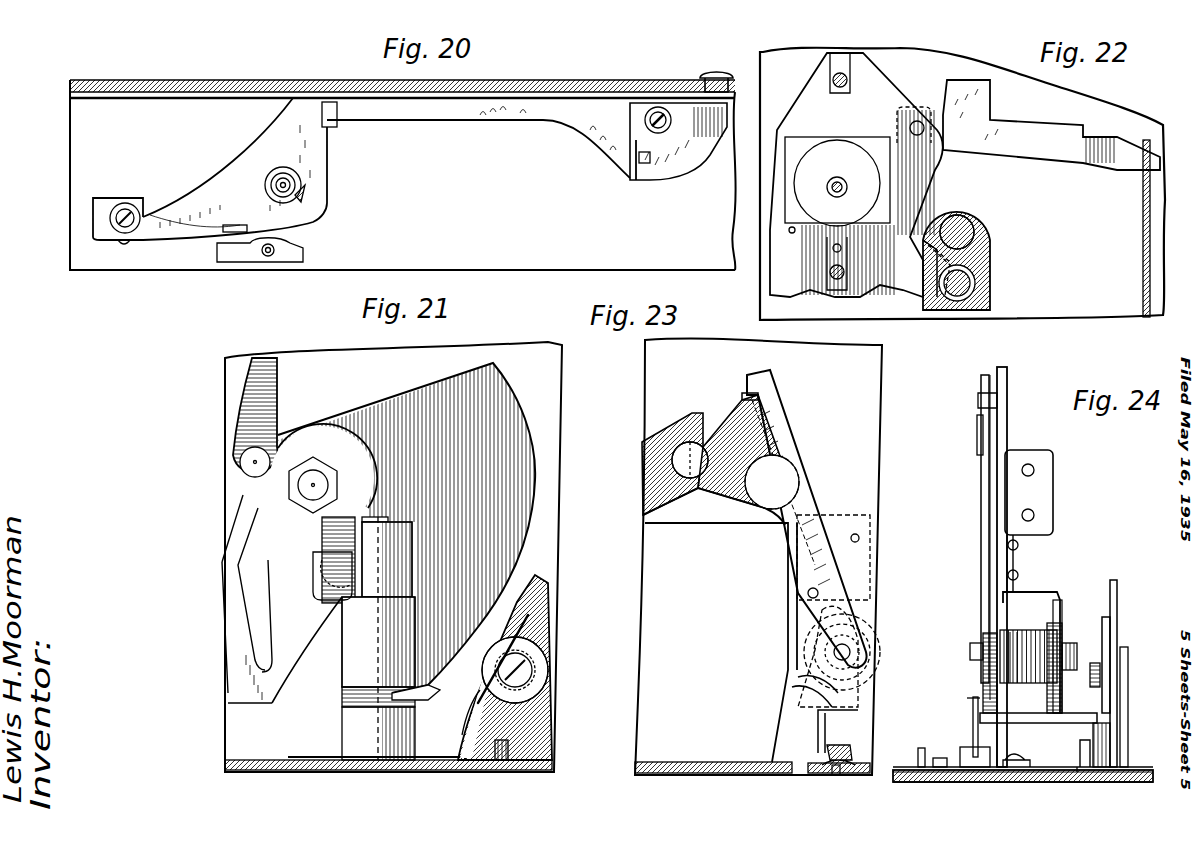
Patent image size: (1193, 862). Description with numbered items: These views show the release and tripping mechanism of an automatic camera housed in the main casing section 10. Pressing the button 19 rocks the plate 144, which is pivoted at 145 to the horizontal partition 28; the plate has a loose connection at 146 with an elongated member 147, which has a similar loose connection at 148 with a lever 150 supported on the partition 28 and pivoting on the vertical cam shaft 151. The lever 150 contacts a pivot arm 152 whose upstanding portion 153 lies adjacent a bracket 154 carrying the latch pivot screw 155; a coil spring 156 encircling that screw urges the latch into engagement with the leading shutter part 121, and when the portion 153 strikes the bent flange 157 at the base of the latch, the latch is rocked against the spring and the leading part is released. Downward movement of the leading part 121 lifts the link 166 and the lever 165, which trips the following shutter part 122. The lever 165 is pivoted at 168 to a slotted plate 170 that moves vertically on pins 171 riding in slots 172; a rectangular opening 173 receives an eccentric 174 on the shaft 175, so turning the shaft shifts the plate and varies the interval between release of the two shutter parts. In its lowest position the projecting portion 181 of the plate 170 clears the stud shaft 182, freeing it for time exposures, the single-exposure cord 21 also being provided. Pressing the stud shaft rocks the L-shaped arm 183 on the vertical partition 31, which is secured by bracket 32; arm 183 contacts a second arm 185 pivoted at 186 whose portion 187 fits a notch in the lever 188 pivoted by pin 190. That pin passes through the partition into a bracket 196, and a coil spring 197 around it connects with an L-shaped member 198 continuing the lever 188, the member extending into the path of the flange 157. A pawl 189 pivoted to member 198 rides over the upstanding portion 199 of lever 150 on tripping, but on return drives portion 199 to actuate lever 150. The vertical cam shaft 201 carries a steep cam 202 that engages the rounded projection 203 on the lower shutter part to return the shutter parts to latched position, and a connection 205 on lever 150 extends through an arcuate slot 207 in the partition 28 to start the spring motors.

In FIG. 20, the main section of casing 10 is at (274, 85).
In FIG. 20, the button 19 is at (714, 70).
In FIG. 22, the cord 21 is at (972, 228).
In FIG. 20, the horizontal partition 28 is at (668, 262).
In FIG. 24, the horizontal partition 28 is at (1118, 782).
In FIG. 23, the vertical partition 31 is at (787, 627).
In FIG. 24, the vertical partition 31 is at (1000, 412).
In FIG. 24, the bracket 32 is at (1047, 487).
In FIG. 21, the leading shutter part 121 is at (427, 689).
In FIG. 21, the following shutter part 122 is at (517, 453).
In FIG. 20, the plate 144 is at (690, 170).
In FIG. 20, the pivot 145 is at (656, 107).
In FIG. 20, the loose connection 146 is at (633, 176).
In FIG. 20, the elongated member 147 is at (492, 122).
In FIG. 20, the loose connection 148 is at (335, 125).
In FIG. 20, the lever 150 is at (283, 127).
In FIG. 21, the lever 150 is at (315, 757).
In FIG. 23, the lever 150 is at (697, 760).
In FIG. 24, the lever 150 is at (903, 772).
In FIG. 20, the vertical cam shaft 151 is at (303, 183).
In FIG. 20, the pivot arm 152 is at (245, 262).
In FIG. 23, the pivot arm 152 is at (853, 775).
In FIG. 24, the pivot arm 152 is at (945, 767).
In FIG. 20, the upstanding portion 153 is at (303, 250).
In FIG. 23, the upstanding portion 153 is at (842, 755).
In FIG. 24, the upstanding portion 153 is at (1077, 772).
In FIG. 21, the bracket 154 is at (474, 712).
In FIG. 23, the bracket 154 is at (798, 703).
In FIG. 24, the bracket 154 is at (1118, 690).
In FIG. 24, the screw 155 is at (1097, 663).
In FIG. 21, the coil spring 156 is at (548, 630).
In FIG. 24, the coil spring 156 is at (1117, 655).
In FIG. 21, the bent flange 157 is at (540, 715).
In FIG. 23, the bent flange 157 is at (818, 733).
In FIG. 24, the bent flange 157 is at (1090, 740).
In FIG. 22, the lever 165 is at (1058, 160).
In FIG. 22, the link 166 is at (1143, 253).
In FIG. 21, the link 166 is at (263, 412).
In FIG. 22, the pivot 168 is at (919, 120).
In FIG. 22, the slotted plate 170 is at (935, 168).
In FIG. 22, the pins 171 is at (834, 88).
In FIG. 22, the slots 172 is at (847, 249).
In FIG. 22, the rectangular opening 173 is at (800, 240).
In FIG. 22, the eccentric 174 is at (838, 145).
In FIG. 22, the shaft 175 is at (837, 177).
In FIG. 22, the projecting portion 181 is at (945, 272).
In FIG. 22, the stud shaft 182 is at (975, 284).
In FIG. 23, the L-shaped arm 183 is at (665, 495).
In FIG. 23, the second arm 185 is at (732, 495).
In FIG. 24, the second arm 185 is at (990, 487).
In FIG. 23, the pivot 186 is at (768, 498).
In FIG. 23, the portion 187 is at (745, 395).
In FIG. 24, the portion 187 is at (987, 402).
In FIG. 23, the lever 188 is at (808, 498).
In FIG. 24, the lever 188 is at (981, 538).
In FIG. 24, the pawl 189 is at (975, 712).
In FIG. 23, the pivot pin 190 is at (845, 650).
In FIG. 24, the pivot pin 190 is at (972, 657).
In FIG. 24, the bracket 196 is at (1057, 613).
In FIG. 23, the coil spring 197 is at (858, 673).
In FIG. 24, the coil spring 197 is at (1017, 630).
In FIG. 23, the L-shaped member 198 is at (798, 693).
In FIG. 24, the L-shaped member 198 is at (997, 723).
In FIG. 20, the upstanding portion 199 is at (235, 225).
In FIG. 24, the upstanding portion 199 is at (958, 750).
In FIG. 21, the vertical cam shaft 201 is at (365, 688).
In FIG. 21, the cam 202 is at (322, 533).
In FIG. 21, the projection 203 is at (310, 566).
In FIG. 20, the connection 205 is at (130, 207).
In FIG. 20, the arcuate slot 207 is at (123, 243).